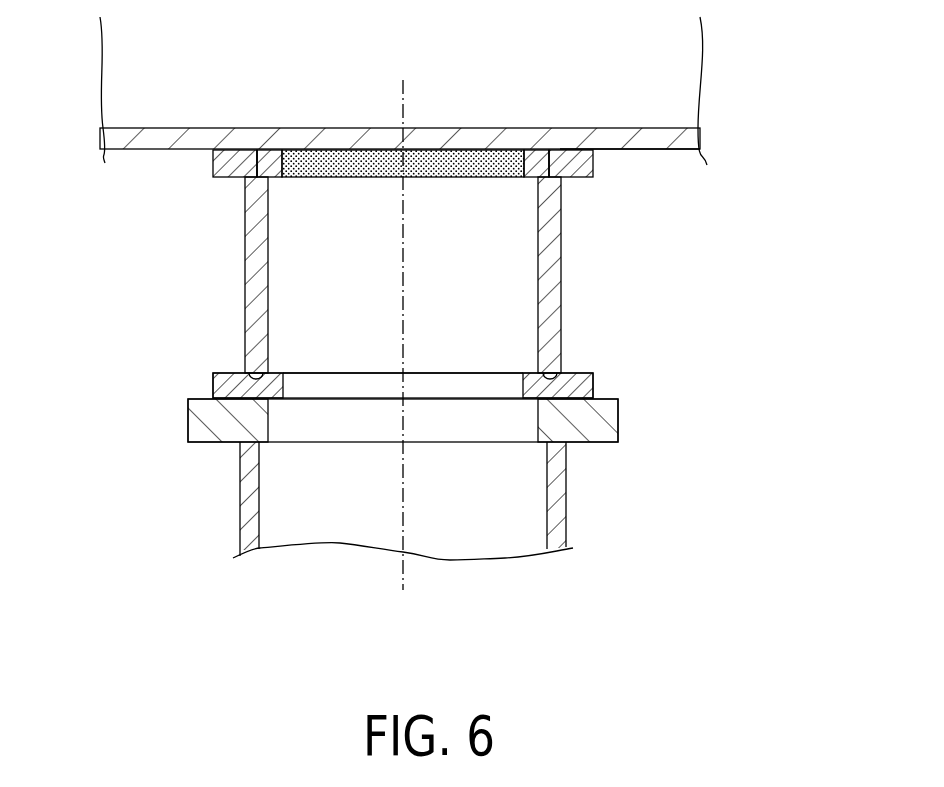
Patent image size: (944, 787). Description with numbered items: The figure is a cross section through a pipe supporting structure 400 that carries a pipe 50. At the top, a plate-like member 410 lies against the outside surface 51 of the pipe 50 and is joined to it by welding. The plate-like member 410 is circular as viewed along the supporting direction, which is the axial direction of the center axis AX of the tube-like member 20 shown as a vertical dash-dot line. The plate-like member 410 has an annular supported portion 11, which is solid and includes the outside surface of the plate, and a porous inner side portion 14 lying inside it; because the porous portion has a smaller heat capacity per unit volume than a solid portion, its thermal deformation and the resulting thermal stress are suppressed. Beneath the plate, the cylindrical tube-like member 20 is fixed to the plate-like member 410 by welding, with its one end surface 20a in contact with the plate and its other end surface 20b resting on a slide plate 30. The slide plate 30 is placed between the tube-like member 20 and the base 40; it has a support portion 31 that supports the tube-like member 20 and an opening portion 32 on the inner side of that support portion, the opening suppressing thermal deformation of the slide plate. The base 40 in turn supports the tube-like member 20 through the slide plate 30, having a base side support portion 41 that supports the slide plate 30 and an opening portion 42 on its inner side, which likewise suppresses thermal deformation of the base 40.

The pipe 50 is at (623, 126).
The outside surface 51 is at (672, 150).
The porous inner side portion 14 is at (497, 163).
The plate-like member 410 is at (211, 163).
The one end surface 20a is at (258, 158).
The other end surface 20b is at (237, 372).
The tube-like member 20 is at (253, 243).
The supported portion 11 is at (572, 170).
The center axis AX is at (410, 318).
The slide plate 30 is at (211, 386).
The support portion 31 is at (580, 387).
The opening portion 32 is at (503, 390).
The base 40 is at (186, 421).
The base side support portion 41 is at (605, 418).
The opening portion 42 is at (447, 422).
The pipe supporting structure 400 is at (644, 228).